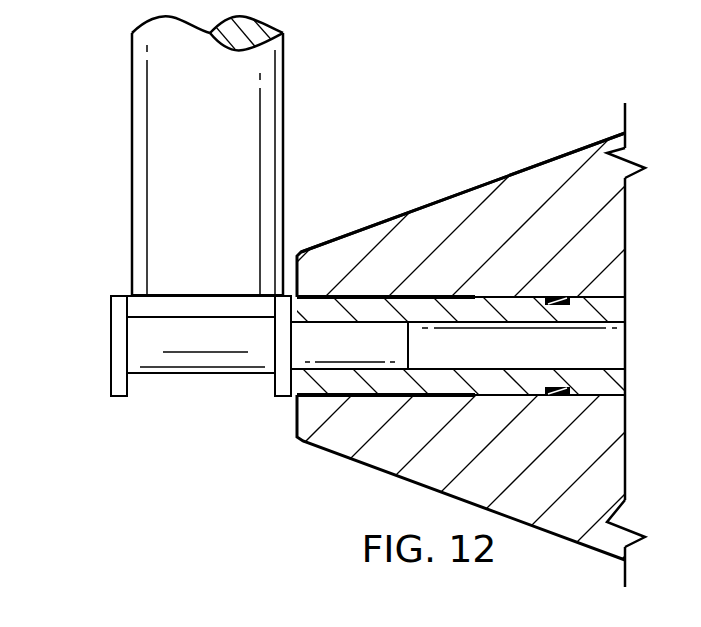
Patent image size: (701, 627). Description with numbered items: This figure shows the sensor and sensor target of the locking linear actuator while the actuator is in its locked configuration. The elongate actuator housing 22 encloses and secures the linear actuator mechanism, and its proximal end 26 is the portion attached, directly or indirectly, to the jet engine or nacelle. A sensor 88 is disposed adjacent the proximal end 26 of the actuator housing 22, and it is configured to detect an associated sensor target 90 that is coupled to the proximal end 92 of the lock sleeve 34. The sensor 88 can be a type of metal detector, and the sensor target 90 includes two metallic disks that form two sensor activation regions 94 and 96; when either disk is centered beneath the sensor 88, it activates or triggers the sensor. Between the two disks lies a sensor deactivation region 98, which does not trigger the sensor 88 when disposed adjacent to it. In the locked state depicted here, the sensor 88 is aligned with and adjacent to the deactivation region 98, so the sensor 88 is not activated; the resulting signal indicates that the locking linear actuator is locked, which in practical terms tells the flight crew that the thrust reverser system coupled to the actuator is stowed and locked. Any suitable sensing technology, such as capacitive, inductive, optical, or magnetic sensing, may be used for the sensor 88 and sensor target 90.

The actuator housing 22 is at (462, 192).
The proximal end 26 is at (387, 198).
The lock sleeve 34 is at (514, 389).
The sensor 88 is at (131, 170).
The sensor target 90 is at (248, 430).
The proximal end 92 is at (357, 402).
The sensor activation region 94 is at (284, 396).
The sensor activation region 96 is at (119, 396).
The sensor deactivation region 98 is at (194, 394).